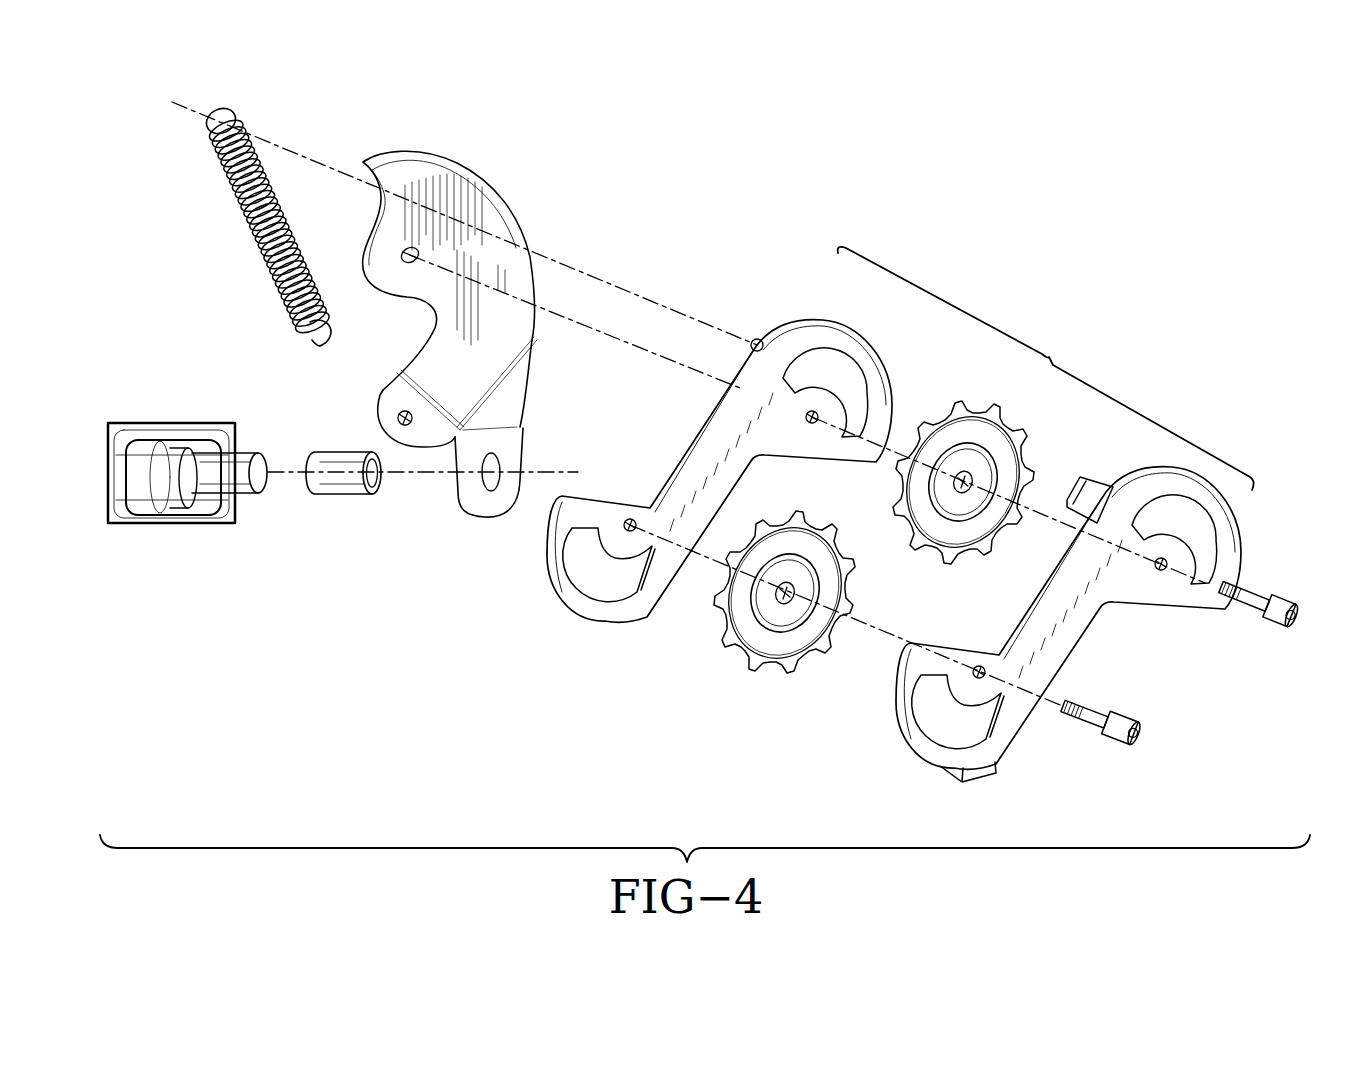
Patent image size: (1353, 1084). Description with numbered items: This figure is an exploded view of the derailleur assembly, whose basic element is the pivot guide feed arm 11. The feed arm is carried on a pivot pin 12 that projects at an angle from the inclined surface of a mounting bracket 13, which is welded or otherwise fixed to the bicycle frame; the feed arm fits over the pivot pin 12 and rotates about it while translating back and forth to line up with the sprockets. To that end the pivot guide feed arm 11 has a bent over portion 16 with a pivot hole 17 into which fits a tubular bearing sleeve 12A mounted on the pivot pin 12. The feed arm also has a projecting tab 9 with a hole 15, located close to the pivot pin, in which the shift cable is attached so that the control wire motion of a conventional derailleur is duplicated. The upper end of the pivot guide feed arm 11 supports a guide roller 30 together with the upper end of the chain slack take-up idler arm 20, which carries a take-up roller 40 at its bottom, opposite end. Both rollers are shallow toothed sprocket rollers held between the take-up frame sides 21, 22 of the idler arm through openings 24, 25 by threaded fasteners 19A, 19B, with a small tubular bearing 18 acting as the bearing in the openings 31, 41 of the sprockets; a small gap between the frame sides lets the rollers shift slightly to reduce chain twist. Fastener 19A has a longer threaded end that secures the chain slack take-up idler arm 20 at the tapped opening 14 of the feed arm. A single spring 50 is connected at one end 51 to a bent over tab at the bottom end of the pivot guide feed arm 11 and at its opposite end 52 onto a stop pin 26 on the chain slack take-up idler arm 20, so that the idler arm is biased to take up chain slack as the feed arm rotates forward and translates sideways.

The projecting tab 9 is at (385, 385).
The pivot guide feed arm 11 is at (444, 355).
The pivot pin 12 is at (247, 450).
The tubular bearing sleeve 12A is at (318, 492).
The mounting bracket 13 is at (178, 507).
The tapped opening 14 is at (404, 252).
The hole 15 is at (400, 420).
The bent over portion 16 is at (500, 497).
The pivot hole 17 is at (493, 466).
The tubular bearing 18 is at (1169, 656).
The threaded fastener 19A is at (1262, 597).
The threaded fastener 19B is at (1120, 720).
The chain slack take-up idler arm 20 is at (1072, 345).
The take-up frame side 21 is at (705, 432).
The take-up frame side 22 is at (1042, 590).
The opening 24 is at (633, 522).
The opening 25 is at (815, 422).
The stop pin 26 is at (756, 341).
The guide roller 30 is at (982, 465).
The opening 31 is at (975, 483).
The take-up roller 40 is at (788, 606).
The opening 41 is at (795, 590).
The spring 50 is at (279, 220).
The end of spring 51 is at (334, 338).
The opposite end of spring 52 is at (234, 110).